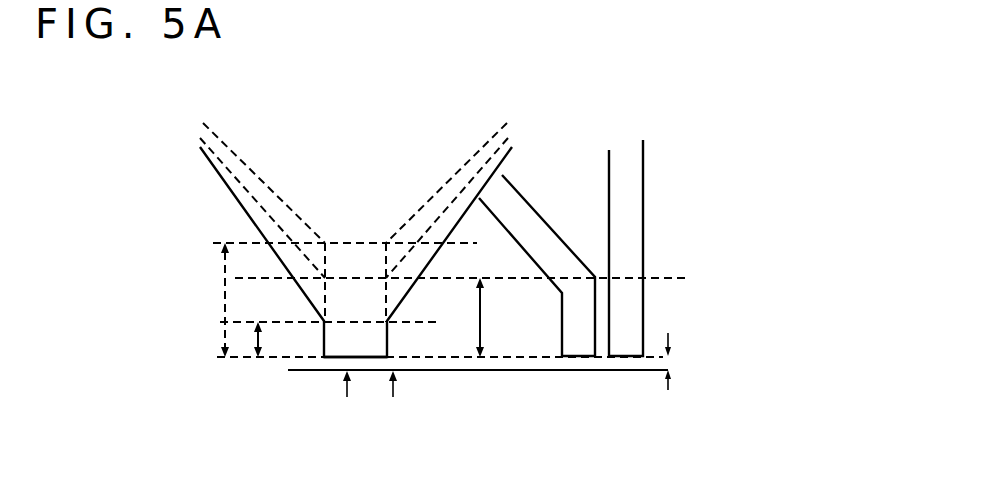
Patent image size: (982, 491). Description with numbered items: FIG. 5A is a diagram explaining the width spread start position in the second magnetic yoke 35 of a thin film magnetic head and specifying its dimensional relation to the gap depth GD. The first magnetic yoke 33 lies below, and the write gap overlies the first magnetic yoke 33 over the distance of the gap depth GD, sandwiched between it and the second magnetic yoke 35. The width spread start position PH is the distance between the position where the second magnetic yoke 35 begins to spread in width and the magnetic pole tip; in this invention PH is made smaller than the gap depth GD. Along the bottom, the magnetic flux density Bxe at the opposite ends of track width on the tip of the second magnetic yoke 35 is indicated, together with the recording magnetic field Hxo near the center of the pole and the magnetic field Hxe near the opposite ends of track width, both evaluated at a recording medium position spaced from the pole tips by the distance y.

The second magnetic yoke 35 is at (508, 203).
The first magnetic yoke 33 is at (629, 167).
The width spread start position PH is at (227, 310).
The gap depth GD is at (482, 322).
The magnetic flux density at the opposite ends of track width Bxe is at (391, 352).
The magnetic field near the center of the second magnetic yoke Hxo is at (337, 398).
The magnetic field near the opposite ends of track width Hxe is at (395, 398).
The distance from the pole tips to the recording medium position y is at (683, 361).